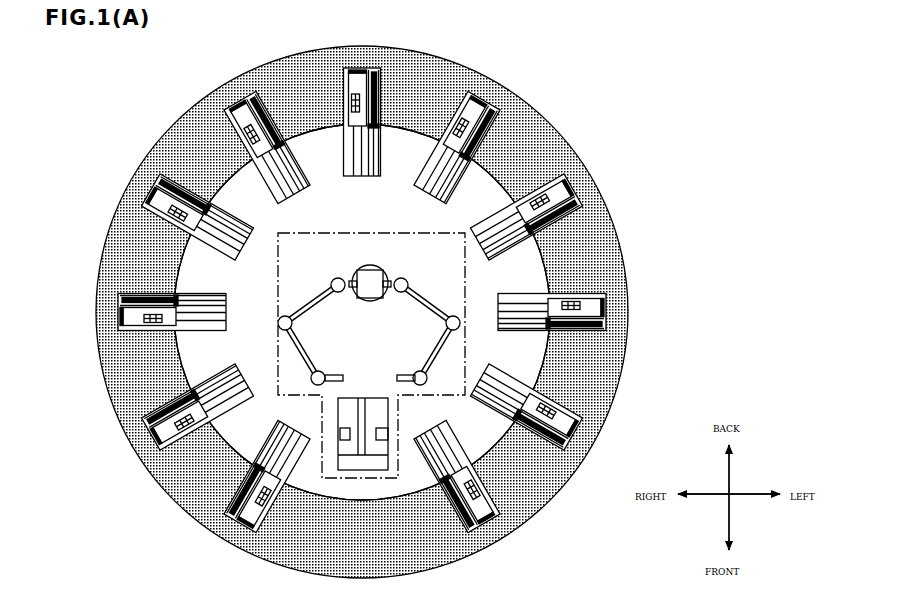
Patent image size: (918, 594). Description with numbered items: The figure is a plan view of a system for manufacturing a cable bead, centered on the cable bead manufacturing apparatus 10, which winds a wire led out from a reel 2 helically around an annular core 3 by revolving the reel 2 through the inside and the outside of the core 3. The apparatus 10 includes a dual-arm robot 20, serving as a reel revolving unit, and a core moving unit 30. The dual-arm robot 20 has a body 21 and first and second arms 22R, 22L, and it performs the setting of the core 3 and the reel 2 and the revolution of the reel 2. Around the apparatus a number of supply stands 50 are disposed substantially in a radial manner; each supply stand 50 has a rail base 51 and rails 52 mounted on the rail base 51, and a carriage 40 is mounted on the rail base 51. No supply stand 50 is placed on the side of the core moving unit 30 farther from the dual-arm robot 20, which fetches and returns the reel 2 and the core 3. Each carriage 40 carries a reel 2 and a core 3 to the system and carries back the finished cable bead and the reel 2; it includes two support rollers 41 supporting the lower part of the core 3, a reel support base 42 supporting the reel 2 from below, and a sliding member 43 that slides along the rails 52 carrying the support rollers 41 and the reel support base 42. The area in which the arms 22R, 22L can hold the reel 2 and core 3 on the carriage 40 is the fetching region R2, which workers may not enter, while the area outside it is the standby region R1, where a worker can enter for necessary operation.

The reel 2 is at (140, 208).
The annular core 3 is at (406, 311).
The cable bead manufacturing apparatus 10 is at (323, 233).
The dual-arm robot 20 is at (391, 313).
The body 21 is at (368, 314).
The first arm 22R is at (311, 315).
The second arm 22L is at (378, 268).
The core moving unit 30 is at (378, 414).
The carriage 40 is at (406, 328).
The support rollers 41 is at (575, 314).
The reel support base 42 is at (571, 306).
The sliding member 43 is at (574, 308).
The supply stand 50 is at (551, 316).
The rail base 51 is at (551, 324).
The rails 52 is at (523, 308).
The standby region R1 is at (515, 135).
The fetching region R2 is at (470, 202).